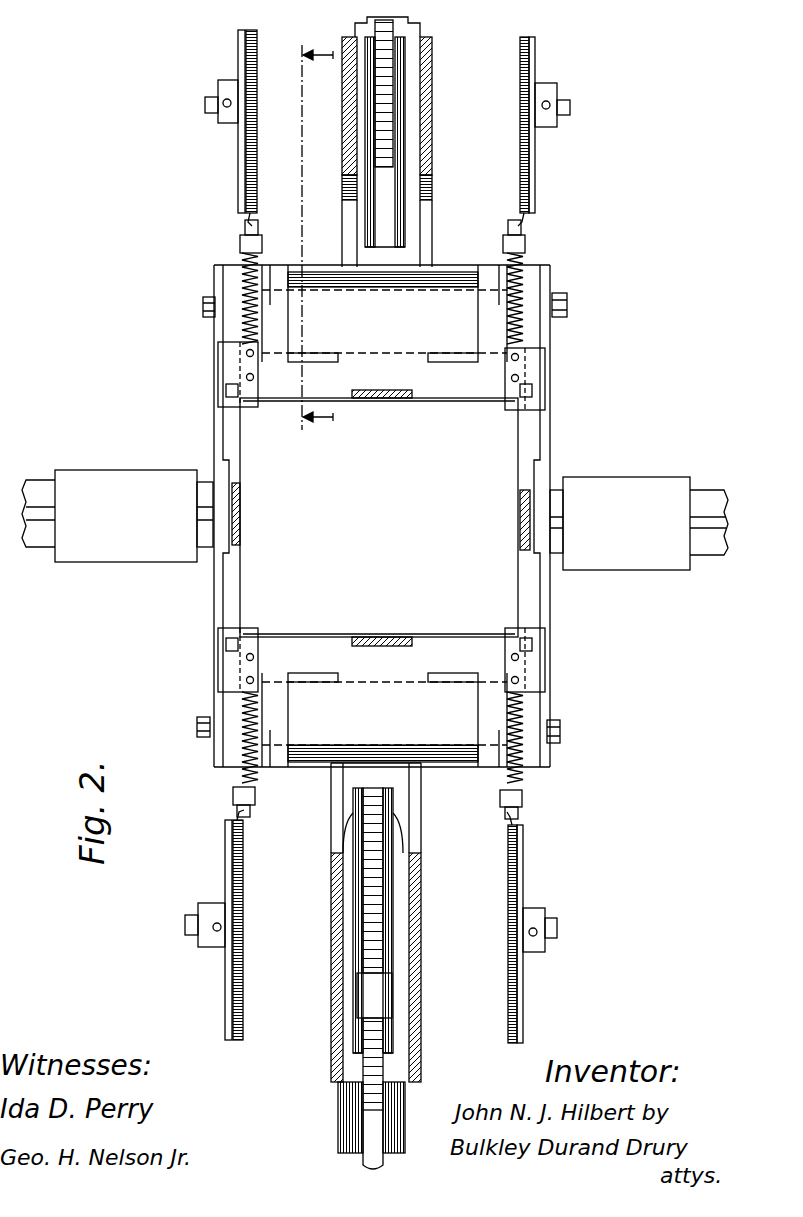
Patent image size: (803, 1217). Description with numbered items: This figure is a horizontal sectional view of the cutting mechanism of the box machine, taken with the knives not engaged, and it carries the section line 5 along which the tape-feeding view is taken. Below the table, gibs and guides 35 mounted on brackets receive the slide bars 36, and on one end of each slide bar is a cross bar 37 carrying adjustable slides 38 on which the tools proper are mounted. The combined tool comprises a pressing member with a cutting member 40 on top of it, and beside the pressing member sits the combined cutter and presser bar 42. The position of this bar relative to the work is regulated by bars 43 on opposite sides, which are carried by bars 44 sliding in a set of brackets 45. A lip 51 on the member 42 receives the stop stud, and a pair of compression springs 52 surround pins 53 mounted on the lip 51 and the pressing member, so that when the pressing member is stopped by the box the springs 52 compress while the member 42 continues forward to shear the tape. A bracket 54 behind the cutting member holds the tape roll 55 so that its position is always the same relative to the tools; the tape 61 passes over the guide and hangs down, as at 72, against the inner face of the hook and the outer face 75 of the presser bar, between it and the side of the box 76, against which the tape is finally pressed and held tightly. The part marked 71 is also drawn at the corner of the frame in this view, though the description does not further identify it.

The section line 5— 5 is at (309, 239).
The gibs and guides 35 is at (427, 135).
The slide bars 36 is at (402, 77).
The cross bar 37 is at (460, 273).
The adjustable slides 38 is at (266, 265).
The cutting member 40 is at (218, 368).
The combined cutter and presser bar 42 is at (203, 305).
The bars 43 is at (214, 695).
The bars 44 is at (40, 492).
The brackets 45 is at (102, 490).
The lip 51 is at (240, 245).
The compression springs 52 is at (258, 322).
The pins 53 is at (253, 220).
The bracket 54 is at (257, 95).
The tape roll 55 is at (239, 150).
The tape 61 is at (246, 220).
The corner block 71 is at (232, 398).
The hanging portion of tape 72 is at (520, 400).
The outer face of presser bar 75 is at (250, 402).
The side of the box 76 is at (228, 638).